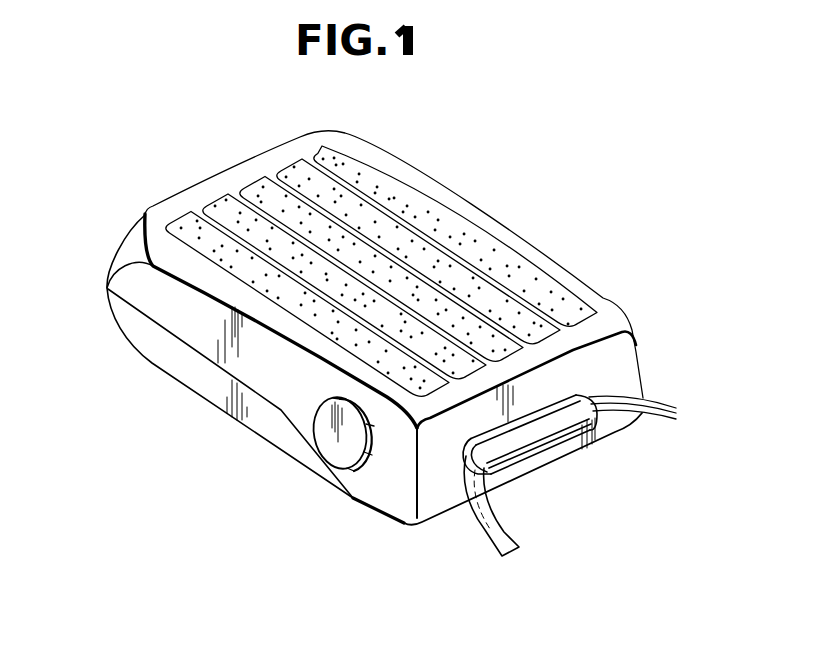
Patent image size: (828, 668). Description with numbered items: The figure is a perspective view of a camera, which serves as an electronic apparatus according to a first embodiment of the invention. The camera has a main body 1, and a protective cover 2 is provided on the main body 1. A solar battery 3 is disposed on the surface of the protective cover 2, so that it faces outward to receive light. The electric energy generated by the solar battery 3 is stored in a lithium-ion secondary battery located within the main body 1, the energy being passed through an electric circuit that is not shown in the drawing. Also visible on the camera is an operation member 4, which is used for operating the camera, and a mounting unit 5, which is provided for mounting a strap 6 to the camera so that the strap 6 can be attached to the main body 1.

The main body 1 is at (210, 389).
The protective cover 2 is at (182, 200).
The solar battery 3 is at (390, 173).
The operation member 4 is at (333, 451).
The mounting unit 5 is at (539, 434).
The strap 6 is at (490, 527).